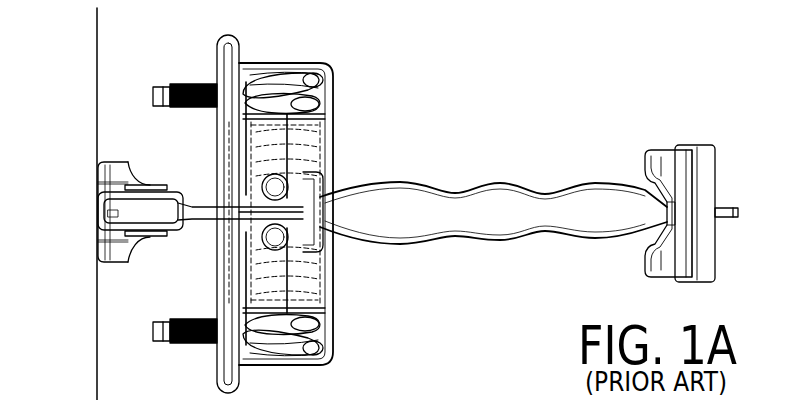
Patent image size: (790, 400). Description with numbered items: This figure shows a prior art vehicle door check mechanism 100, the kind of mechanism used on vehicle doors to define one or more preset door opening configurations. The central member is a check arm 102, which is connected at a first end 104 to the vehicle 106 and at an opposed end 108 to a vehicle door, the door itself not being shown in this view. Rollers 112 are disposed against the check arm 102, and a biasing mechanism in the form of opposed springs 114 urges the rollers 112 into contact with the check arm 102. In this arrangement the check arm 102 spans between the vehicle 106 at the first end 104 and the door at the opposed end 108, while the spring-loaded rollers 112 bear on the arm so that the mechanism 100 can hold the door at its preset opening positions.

The door check mechanism 100 is at (575, 90).
The check arm 102 is at (508, 222).
The first end 104 is at (150, 216).
The vehicle 106 is at (97, 115).
The opposed end 108 is at (662, 190).
The rollers 112 is at (325, 188).
The opposed springs 114 is at (318, 104).